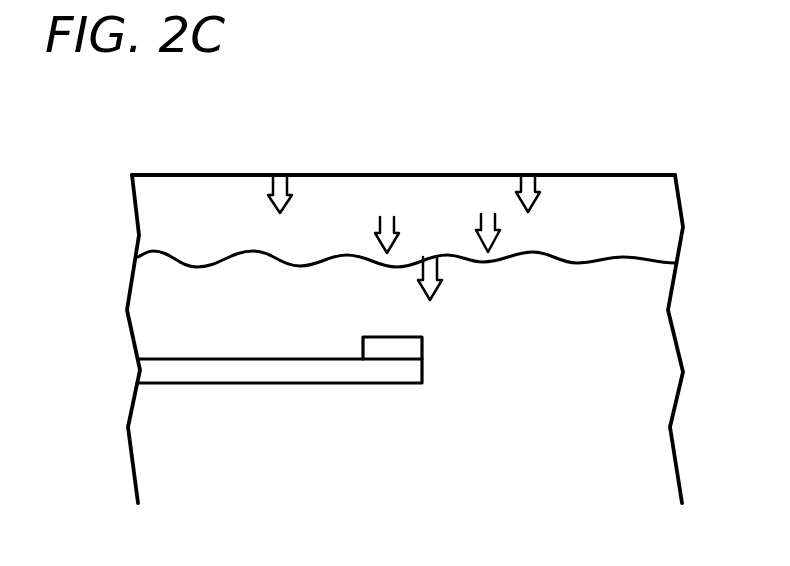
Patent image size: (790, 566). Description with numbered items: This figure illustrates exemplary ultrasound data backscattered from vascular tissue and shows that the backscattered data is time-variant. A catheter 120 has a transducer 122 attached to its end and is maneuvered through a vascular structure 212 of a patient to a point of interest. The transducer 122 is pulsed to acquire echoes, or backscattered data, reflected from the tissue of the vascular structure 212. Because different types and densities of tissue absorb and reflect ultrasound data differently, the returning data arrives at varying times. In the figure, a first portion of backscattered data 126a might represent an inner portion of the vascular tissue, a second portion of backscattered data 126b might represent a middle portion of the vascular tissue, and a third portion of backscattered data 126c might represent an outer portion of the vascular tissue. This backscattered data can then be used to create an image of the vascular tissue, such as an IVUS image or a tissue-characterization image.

The vascular structure 212 is at (402, 175).
The third portion of backscattered data 126c is at (558, 195).
The second portion of backscattered data 126b is at (508, 230).
The first portion of backscattered data 126a is at (451, 280).
The transducer 122 is at (425, 347).
The catheter 120 is at (402, 384).